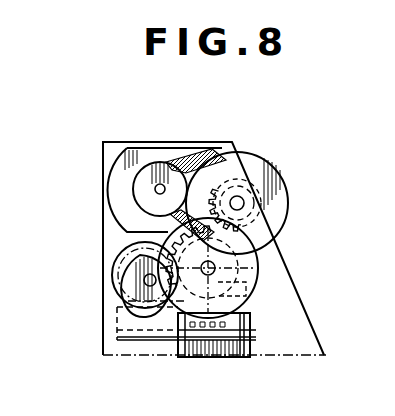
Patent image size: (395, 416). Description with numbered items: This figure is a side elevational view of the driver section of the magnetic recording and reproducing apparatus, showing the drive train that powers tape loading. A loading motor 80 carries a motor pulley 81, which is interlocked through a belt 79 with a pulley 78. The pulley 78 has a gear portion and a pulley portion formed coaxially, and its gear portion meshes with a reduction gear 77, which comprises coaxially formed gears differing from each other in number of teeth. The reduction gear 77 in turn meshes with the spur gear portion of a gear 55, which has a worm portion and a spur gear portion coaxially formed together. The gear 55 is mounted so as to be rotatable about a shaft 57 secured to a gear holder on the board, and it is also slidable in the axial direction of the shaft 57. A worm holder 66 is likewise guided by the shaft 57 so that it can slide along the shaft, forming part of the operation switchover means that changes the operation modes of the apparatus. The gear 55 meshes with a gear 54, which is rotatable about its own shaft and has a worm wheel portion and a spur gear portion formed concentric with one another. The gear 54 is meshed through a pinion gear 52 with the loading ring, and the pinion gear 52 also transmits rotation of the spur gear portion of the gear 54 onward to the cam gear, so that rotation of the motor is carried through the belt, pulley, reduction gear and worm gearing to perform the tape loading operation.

The pinion gear 52 is at (250, 337).
The gear 54 is at (251, 291).
The gear 55 is at (118, 284).
The shaft 57 is at (130, 306).
The worm holder 66 is at (141, 341).
The reduction gear 77 is at (268, 256).
The pulley 78 is at (272, 168).
The belt 79 is at (189, 170).
The loading motor 80 is at (108, 203).
The motor pulley 81 is at (140, 192).